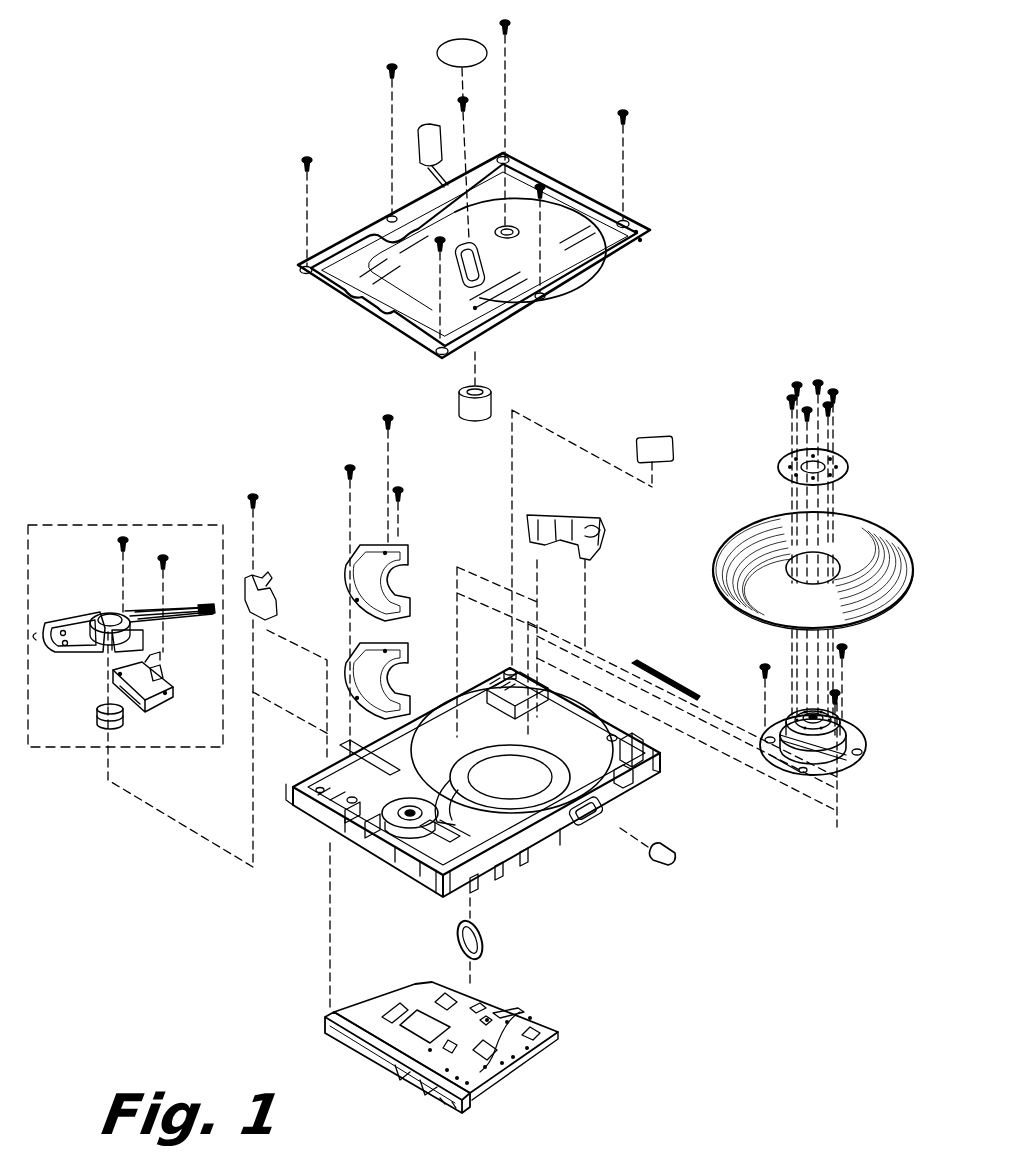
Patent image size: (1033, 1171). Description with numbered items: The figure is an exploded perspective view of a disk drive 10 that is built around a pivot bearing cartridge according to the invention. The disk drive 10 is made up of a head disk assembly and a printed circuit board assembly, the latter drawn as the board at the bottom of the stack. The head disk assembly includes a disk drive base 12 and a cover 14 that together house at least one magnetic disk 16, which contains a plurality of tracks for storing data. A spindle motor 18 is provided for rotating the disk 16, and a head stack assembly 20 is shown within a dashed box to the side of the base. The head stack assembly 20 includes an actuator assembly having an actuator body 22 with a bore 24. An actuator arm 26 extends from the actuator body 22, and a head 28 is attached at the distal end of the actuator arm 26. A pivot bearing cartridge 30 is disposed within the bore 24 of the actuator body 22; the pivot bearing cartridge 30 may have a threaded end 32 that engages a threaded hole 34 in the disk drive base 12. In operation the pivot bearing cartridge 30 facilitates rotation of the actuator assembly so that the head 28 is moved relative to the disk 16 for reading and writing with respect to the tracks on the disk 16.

The disk drive 10 is at (268, 226).
The disk drive base 12 is at (530, 860).
The cover 14 is at (570, 258).
The magnetic disk 16 is at (760, 532).
The spindle motor 18 is at (857, 732).
The head stack assembly 20 is at (156, 523).
The actuator body 22 is at (93, 617).
The bore 24 is at (127, 621).
The actuator arm 26 is at (167, 626).
The head 28 is at (207, 608).
The pivot bearing cartridge 30 is at (100, 710).
The threaded end 32 is at (120, 723).
The threaded hole 34 is at (402, 827).